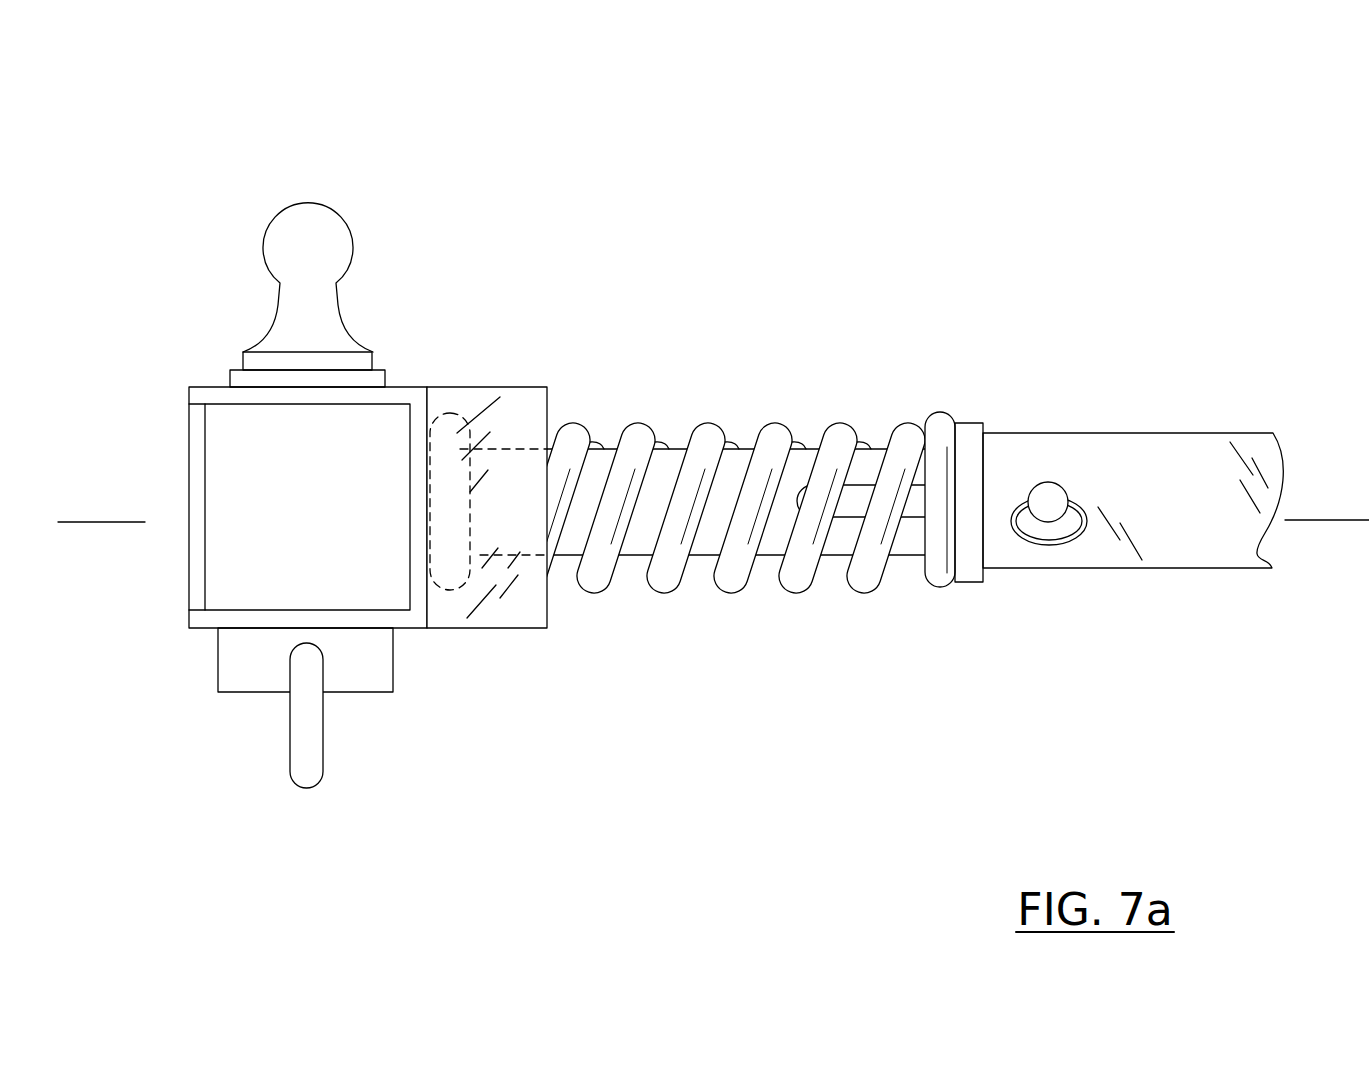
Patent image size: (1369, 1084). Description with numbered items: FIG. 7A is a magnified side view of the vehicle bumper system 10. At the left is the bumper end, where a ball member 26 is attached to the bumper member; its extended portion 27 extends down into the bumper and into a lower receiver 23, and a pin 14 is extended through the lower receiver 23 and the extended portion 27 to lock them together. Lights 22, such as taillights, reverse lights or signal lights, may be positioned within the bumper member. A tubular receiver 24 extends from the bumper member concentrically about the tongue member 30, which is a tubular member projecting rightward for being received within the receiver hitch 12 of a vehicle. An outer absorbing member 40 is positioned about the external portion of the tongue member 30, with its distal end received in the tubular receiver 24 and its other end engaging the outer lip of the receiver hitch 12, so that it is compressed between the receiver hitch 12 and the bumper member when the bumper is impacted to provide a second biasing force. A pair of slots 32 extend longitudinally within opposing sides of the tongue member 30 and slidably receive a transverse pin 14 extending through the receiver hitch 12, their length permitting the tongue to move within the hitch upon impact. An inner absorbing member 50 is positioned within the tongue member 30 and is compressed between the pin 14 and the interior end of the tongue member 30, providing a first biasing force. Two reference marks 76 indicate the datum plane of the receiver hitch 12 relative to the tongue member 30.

The vehicle bumper system 10 is at (1182, 172).
The receiver hitch 12 is at (1187, 548).
The pin 14 is at (305, 772).
The lights 22 is at (235, 568).
The lower receiver 23 is at (380, 665).
The tubular receiver 24 is at (525, 402).
The ball member 26 is at (325, 250).
The extended portion 27 is at (235, 378).
The tongue member 30 is at (703, 552).
The slots 32 is at (848, 492).
The outer absorbing member 40 is at (708, 437).
The inner absorbing member 50 is at (850, 503).
The reference datum line 76 is at (101, 522).